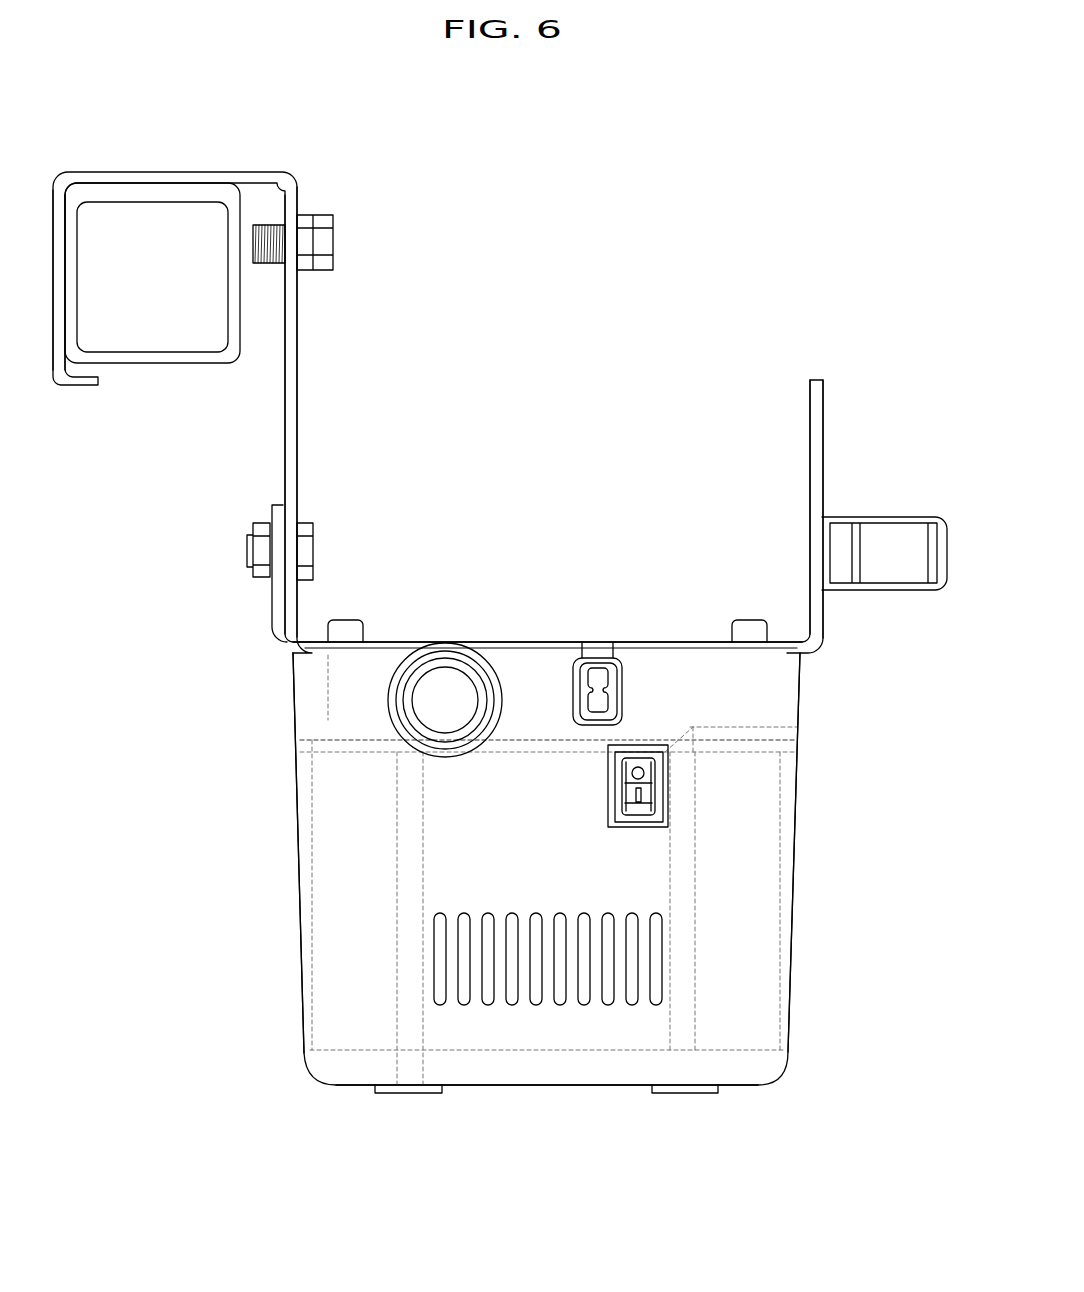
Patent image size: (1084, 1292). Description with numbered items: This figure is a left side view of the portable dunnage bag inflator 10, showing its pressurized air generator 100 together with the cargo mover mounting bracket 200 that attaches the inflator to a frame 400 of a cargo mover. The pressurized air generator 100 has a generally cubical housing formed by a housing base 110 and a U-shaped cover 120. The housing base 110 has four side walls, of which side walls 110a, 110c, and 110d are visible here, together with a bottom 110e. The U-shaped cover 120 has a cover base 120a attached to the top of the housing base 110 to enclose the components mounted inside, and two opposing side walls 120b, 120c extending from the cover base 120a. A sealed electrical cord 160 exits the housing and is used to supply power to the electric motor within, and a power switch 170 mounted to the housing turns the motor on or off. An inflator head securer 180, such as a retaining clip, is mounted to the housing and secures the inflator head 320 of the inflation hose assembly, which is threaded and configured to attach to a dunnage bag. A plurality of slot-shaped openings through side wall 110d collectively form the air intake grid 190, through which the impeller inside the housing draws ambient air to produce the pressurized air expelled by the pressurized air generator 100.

The portable dunnage bag inflator 10 is at (693, 174).
The pressurized air generator 100 is at (816, 1022).
The housing base 110 is at (773, 1081).
The side wall 110a is at (797, 782).
The side wall 110c is at (300, 888).
The side wall 110d is at (555, 833).
The bottom 110e is at (577, 1087).
The U-shaped cover 120 is at (815, 379).
The cover base 120a is at (523, 641).
The side wall 120b is at (272, 618).
The side wall 120c is at (822, 405).
The sealed electrical cord 160 is at (623, 687).
The power switch 170 is at (668, 790).
The inflator head securer 180 is at (900, 515).
The air intake grid 190 is at (510, 1007).
The cargo mover mounting bracket 200 is at (170, 173).
The inflator head 320 is at (402, 702).
The frame 400 is at (155, 363).